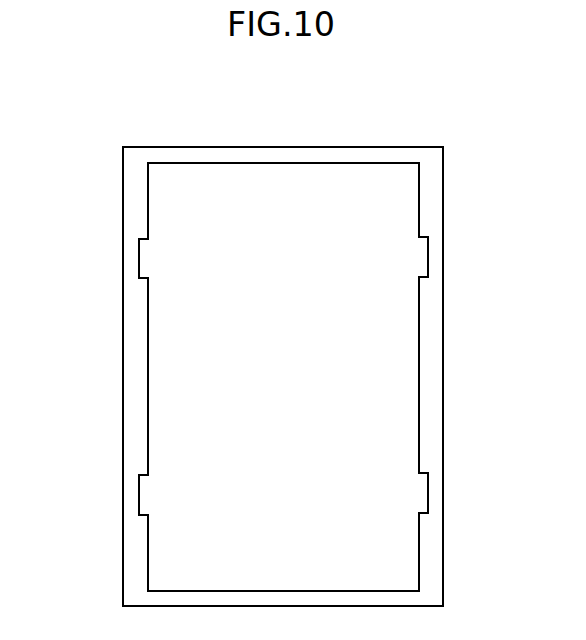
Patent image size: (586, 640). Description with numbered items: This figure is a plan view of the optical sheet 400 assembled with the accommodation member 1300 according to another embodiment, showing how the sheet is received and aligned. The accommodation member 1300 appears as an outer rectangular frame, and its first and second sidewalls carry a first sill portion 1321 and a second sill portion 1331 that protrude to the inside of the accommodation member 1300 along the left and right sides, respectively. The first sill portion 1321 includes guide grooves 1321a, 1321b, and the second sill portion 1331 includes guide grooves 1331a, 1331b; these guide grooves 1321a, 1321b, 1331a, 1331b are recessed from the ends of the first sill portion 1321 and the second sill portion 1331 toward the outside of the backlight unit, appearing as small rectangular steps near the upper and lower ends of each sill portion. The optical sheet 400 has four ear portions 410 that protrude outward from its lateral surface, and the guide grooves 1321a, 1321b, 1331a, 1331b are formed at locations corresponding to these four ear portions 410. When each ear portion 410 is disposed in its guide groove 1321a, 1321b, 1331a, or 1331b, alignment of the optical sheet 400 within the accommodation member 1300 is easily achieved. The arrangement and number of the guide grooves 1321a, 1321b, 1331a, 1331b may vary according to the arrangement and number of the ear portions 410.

The accommodation member 1300 is at (245, 147).
The optical sheet 400 is at (345, 172).
The ear portion 410 is at (143, 248).
The first sill portion 1321 is at (138, 373).
The guide groove 1321a is at (140, 260).
The guide groove 1321b is at (140, 493).
The second sill portion 1331 is at (428, 372).
The guide groove 1331a is at (428, 258).
The guide groove 1331b is at (429, 493).